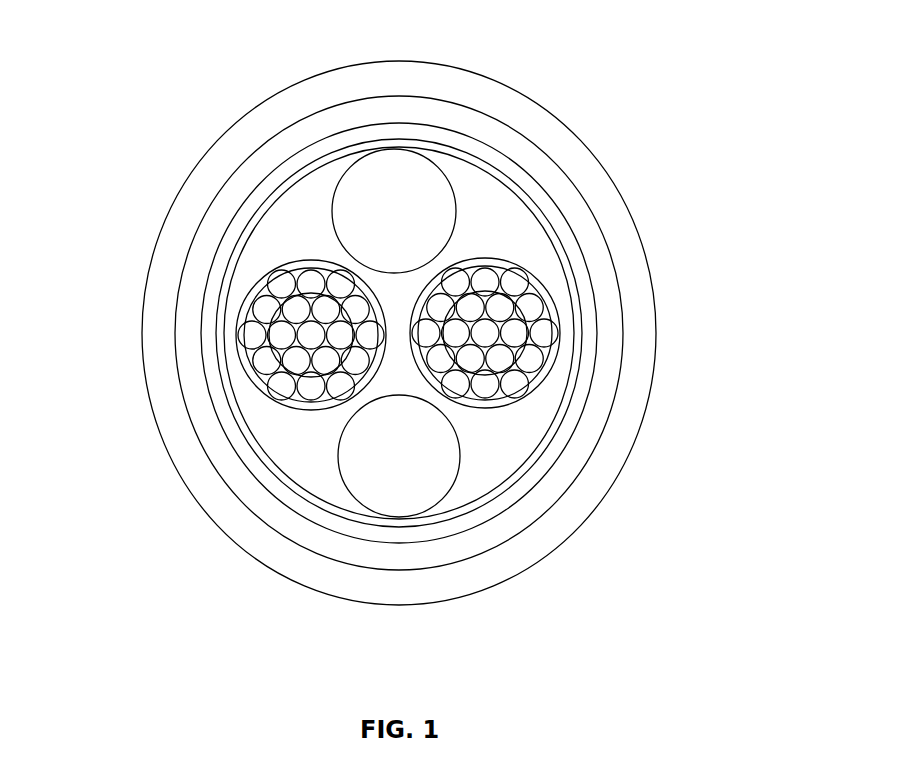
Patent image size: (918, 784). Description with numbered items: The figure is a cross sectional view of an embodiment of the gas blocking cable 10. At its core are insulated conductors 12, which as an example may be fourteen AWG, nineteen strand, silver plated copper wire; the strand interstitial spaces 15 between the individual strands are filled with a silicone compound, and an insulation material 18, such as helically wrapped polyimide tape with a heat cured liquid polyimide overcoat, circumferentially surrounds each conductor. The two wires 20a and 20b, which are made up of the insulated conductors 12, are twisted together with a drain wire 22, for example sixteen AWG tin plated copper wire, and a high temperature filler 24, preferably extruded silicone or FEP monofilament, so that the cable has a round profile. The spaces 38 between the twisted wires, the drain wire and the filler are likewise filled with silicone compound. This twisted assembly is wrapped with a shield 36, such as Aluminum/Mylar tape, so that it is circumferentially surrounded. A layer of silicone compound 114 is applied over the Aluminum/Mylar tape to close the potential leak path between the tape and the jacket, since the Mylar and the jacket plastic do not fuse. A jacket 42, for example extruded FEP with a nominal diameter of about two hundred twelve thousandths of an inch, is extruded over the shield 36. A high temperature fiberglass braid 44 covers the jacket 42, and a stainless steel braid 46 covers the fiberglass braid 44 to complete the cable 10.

The gas blocking cable 10 is at (130, 42).
The insulated conductor 12 is at (522, 350).
The strand interstitial space 15 is at (487, 333).
The insulation material 18 is at (547, 277).
The wire 20a is at (557, 362).
The wire 20b is at (265, 420).
The drain wire 22 is at (398, 212).
The high temperature filler 24 is at (404, 460).
The shield 36 is at (267, 203).
The space between twisted wires, drain wire and filler 38 is at (507, 213).
The jacket 42 is at (278, 175).
The high temperature fiberglass braid 44 is at (207, 233).
The stainless steel braid 46 is at (160, 392).
The layer of silicone compound 114 is at (330, 153).